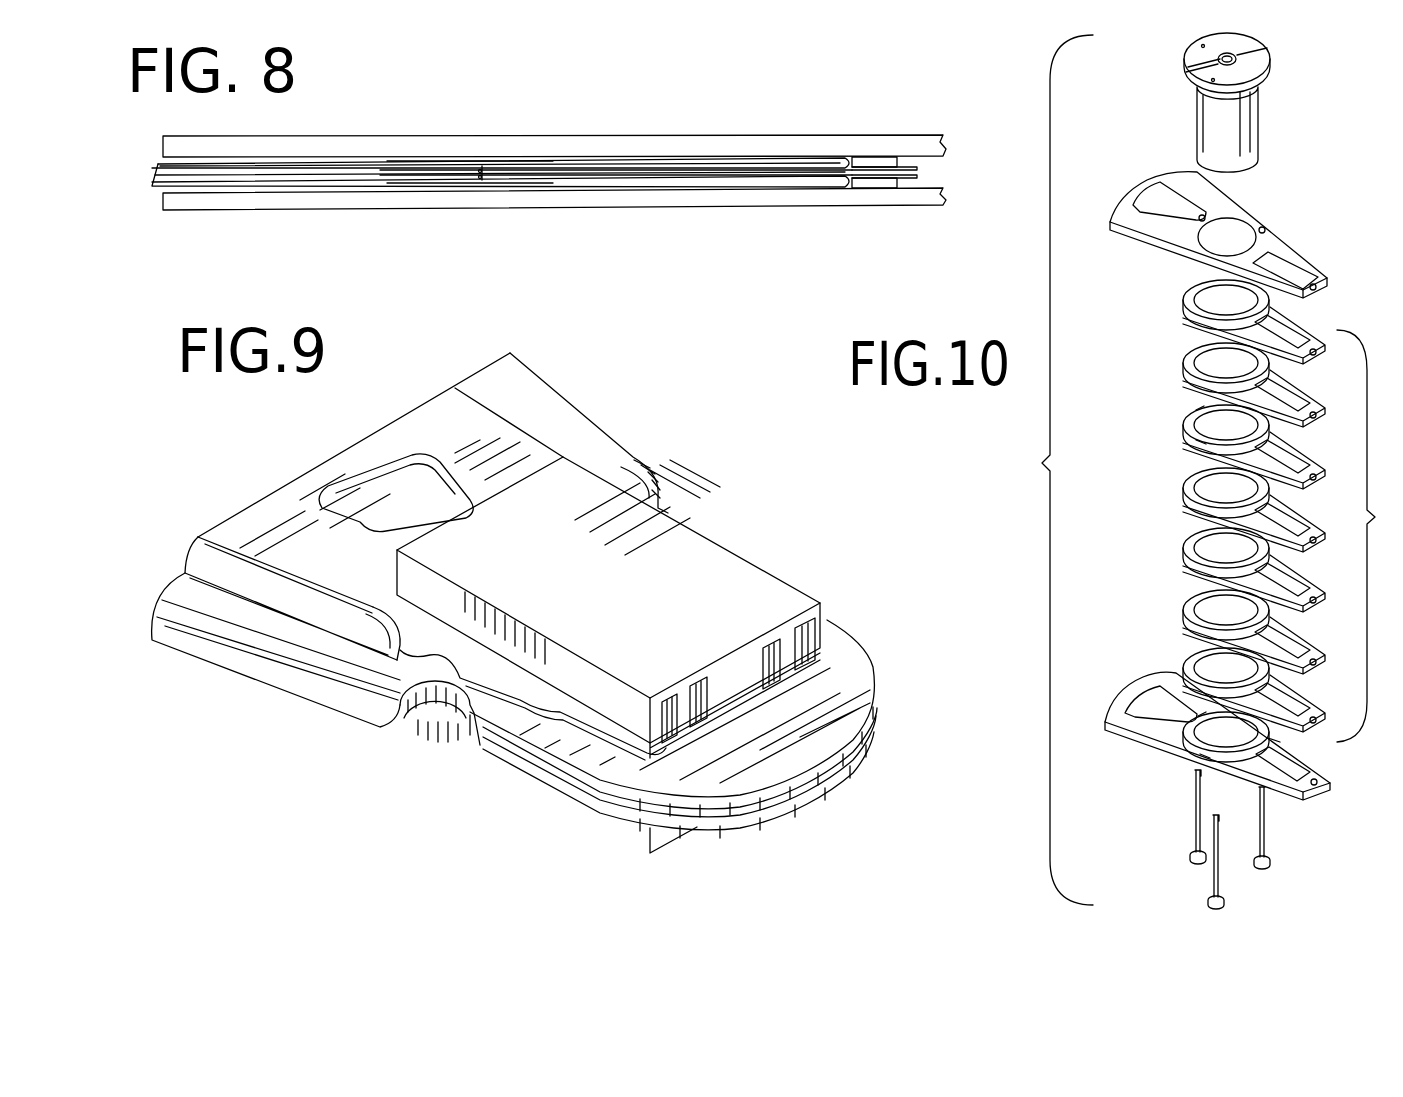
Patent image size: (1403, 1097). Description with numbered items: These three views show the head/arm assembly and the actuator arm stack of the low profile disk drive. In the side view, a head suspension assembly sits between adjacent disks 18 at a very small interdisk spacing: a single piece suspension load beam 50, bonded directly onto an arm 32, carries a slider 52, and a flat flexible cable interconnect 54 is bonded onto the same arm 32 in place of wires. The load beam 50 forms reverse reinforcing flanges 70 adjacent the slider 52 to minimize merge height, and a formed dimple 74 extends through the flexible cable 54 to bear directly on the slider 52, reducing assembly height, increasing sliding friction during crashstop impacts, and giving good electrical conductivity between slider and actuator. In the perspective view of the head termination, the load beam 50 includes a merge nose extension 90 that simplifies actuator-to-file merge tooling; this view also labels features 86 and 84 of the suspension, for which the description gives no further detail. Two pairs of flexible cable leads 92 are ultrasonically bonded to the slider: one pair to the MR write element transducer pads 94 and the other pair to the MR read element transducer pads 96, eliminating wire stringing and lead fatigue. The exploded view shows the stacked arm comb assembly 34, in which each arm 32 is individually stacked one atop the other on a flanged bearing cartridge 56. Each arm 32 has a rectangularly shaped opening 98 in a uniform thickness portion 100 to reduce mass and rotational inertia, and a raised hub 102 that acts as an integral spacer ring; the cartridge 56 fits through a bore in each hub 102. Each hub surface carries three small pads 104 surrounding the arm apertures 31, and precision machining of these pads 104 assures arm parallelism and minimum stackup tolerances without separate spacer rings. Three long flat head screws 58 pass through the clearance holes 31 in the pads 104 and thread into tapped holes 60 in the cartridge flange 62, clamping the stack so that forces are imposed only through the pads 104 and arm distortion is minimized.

In FIG. 8, the disks 18 is at (382, 152).
In FIG. 8, the arm 32 is at (272, 173).
In FIG. 10, the arm 32 is at (1280, 253).
In FIG. 8, the suspension load beam 50 is at (505, 158).
In FIG. 8, the reinforcing flanges 70 is at (762, 160).
In FIG. 9, the reinforcing flanges 70 is at (590, 441).
In FIG. 8, the flexible cable interconnect 54 is at (855, 166).
In FIG. 9, the flexible cable interconnect 54 is at (375, 578).
In FIG. 8, the dimple 74 is at (878, 166).
In FIG. 8, the slider 52 is at (886, 160).
In FIG. 9, the slider 52 is at (690, 566).
In FIG. 9, the slot 86 is at (350, 514).
In FIG. 9, the semicircular notch 84 is at (515, 695).
In FIG. 9, the flexible cable leads 92 is at (770, 646).
In FIG. 9, the MR write element transducer pads 94 is at (822, 641).
In FIG. 9, the MR read element transducer pads 96 is at (693, 690).
In FIG. 9, the merge nose extension 90 is at (850, 673).
In FIG. 10, the stacked arm comb assembly 34 is at (1021, 476).
In FIG. 10, the flanged bearing cartridge 56 is at (1259, 128).
In FIG. 10, the tapped holes 60 is at (1202, 47).
In FIG. 10, the cartridge flange 62 is at (1262, 48).
In FIG. 10, the apertures 31 is at (1262, 228).
In FIG. 10, the rectangularly shaped opening 98 is at (1291, 455).
In FIG. 10, the uniform thickness portion 100 is at (1288, 458).
In FIG. 10, the raised hub 102 is at (1187, 298).
In FIG. 10, the pads 104 is at (1196, 410).
In FIG. 10, the long screws 58 is at (1196, 806).